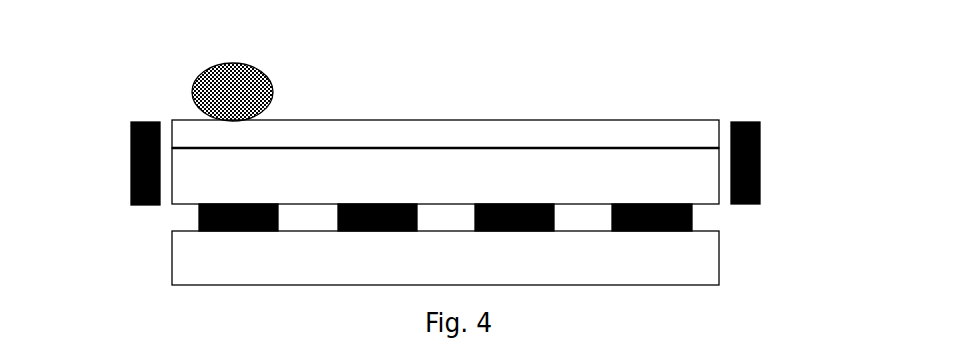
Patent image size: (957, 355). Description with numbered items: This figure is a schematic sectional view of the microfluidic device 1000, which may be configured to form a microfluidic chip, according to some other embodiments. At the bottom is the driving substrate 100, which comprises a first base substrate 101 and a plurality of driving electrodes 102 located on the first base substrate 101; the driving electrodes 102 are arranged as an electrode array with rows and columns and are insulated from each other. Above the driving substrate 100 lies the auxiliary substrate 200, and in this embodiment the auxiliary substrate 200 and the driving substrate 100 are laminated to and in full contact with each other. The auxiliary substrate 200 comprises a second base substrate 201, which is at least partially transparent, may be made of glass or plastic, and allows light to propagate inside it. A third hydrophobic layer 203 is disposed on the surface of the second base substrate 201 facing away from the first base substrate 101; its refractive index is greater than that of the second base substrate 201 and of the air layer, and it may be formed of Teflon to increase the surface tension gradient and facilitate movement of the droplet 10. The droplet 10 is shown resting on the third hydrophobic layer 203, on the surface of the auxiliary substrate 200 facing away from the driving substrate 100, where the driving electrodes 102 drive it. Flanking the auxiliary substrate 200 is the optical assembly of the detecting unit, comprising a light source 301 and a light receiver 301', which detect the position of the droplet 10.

The microfluidic device 1000 is at (719, 79).
The auxiliary substrate 200 is at (729, 108).
The third hydrophobic layer 203 is at (202, 128).
The second base substrate 201 is at (185, 205).
The light source 301 is at (91, 163).
The light receiver 301' is at (810, 163).
The droplet 10 is at (192, 92).
The driving substrate 100 is at (794, 232).
The first base substrate 101 is at (714, 263).
The driving electrodes 102 is at (693, 217).